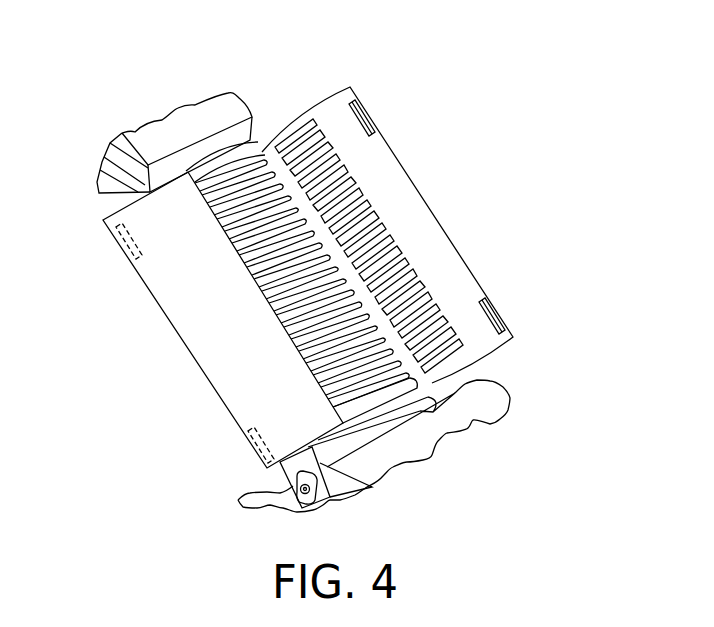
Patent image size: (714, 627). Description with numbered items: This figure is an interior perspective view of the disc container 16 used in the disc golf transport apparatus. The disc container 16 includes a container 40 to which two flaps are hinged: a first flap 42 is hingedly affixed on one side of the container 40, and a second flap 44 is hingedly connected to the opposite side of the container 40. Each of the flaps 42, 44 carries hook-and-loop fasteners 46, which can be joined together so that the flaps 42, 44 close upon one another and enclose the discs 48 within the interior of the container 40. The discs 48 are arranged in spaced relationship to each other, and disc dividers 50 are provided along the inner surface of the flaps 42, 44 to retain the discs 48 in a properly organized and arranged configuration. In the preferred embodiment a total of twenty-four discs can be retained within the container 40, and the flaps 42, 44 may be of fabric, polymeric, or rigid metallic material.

The disc container 16 is at (408, 208).
The container 40 is at (287, 468).
The first flap 42 is at (203, 358).
The second flap 44 is at (458, 260).
The hook-and-loop fasteners 46 is at (364, 111).
The discs 48 is at (262, 150).
The disc dividers 50 is at (300, 135).